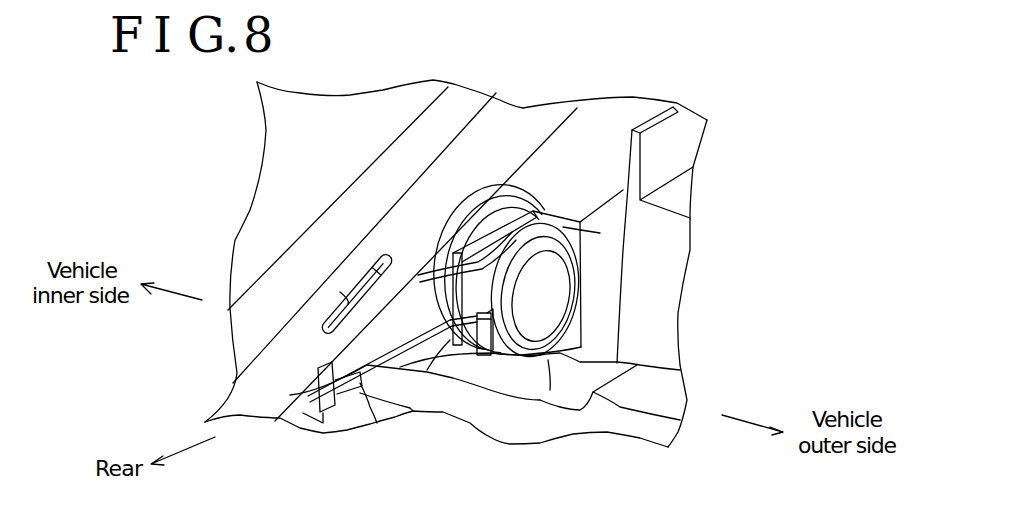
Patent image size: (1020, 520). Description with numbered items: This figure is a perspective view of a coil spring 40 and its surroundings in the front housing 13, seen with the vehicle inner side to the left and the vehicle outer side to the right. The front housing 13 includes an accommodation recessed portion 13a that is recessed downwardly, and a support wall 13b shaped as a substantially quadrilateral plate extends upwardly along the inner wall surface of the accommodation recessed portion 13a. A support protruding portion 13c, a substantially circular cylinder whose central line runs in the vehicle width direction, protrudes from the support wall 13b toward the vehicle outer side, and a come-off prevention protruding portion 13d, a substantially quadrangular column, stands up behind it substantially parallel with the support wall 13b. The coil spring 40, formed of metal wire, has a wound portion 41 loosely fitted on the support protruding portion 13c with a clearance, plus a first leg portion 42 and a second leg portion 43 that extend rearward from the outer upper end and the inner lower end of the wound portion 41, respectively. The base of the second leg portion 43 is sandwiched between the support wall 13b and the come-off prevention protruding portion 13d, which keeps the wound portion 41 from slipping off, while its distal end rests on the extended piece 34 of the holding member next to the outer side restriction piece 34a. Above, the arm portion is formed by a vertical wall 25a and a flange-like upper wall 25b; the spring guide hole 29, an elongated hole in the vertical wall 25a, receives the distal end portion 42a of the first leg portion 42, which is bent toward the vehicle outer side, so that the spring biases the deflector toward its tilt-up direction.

The front housing 13 is at (657, 318).
The accommodation recessed portion 13a is at (550, 360).
The support wall 13b is at (364, 384).
The support protruding portion 13c is at (557, 282).
The come-off prevention protruding portion 13d is at (481, 356).
The vertical wall 25a is at (515, 142).
The upper wall 25b is at (378, 183).
The spring guide hole 29 is at (347, 298).
The extended piece 34 is at (343, 412).
The outer side restriction piece 34a is at (363, 412).
The coil spring 40 is at (558, 200).
The wound portion 41 is at (580, 236).
The first leg portion 42 is at (480, 240).
The distal end portion 42a is at (400, 280).
The second leg portion 43 is at (413, 335).